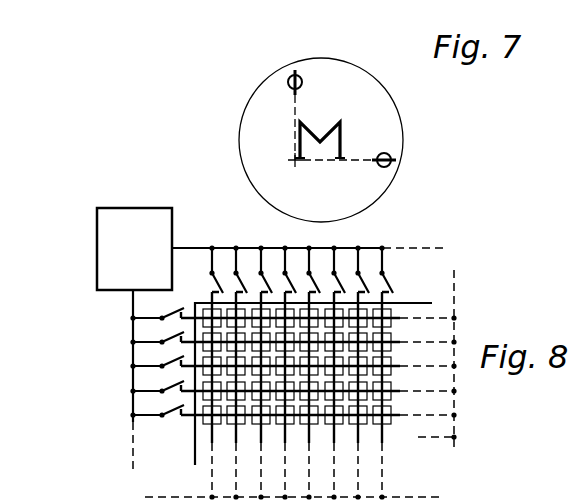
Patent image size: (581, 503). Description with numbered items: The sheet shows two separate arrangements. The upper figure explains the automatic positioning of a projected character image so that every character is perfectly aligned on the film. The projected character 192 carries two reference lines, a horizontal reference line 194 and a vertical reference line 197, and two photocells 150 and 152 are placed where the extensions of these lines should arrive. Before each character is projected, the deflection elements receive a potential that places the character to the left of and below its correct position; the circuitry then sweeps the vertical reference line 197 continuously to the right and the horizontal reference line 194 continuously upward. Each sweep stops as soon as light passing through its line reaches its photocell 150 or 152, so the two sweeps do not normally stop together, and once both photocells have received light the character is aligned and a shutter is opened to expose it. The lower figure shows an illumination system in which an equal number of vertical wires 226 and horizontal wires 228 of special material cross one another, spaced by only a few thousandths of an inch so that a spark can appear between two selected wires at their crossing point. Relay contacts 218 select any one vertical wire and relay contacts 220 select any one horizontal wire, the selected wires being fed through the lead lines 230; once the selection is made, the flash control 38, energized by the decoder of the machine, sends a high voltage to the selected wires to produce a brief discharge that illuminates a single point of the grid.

In FIG. 7, the photocell 150 is at (288, 83).
In FIG. 7, the photocell 152 is at (390, 156).
In FIG. 7, the magnetic tape / record medium 192 is at (342, 145).
In FIG. 7, the horizontal reference line 194 is at (391, 164).
In FIG. 7, the vertical reference line 197 is at (294, 76).
In FIG. 8, the flash control 38 is at (134, 249).
In FIG. 8, the relay contacts 218 is at (392, 285).
In FIG. 8, the relay contacts 220 is at (170, 412).
In FIG. 8, the vertical wires 226 is at (382, 435).
In FIG. 8, the horizontal wires 228 is at (402, 412).
In FIG. 8, the column drive lines 230 is at (360, 420).